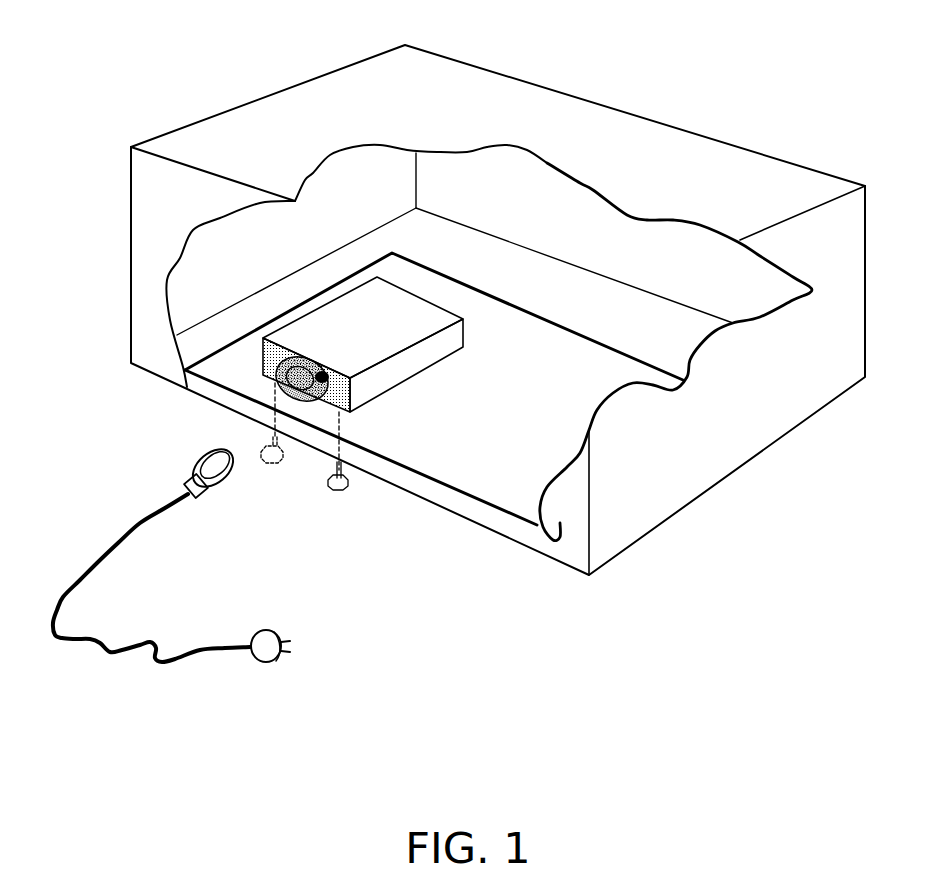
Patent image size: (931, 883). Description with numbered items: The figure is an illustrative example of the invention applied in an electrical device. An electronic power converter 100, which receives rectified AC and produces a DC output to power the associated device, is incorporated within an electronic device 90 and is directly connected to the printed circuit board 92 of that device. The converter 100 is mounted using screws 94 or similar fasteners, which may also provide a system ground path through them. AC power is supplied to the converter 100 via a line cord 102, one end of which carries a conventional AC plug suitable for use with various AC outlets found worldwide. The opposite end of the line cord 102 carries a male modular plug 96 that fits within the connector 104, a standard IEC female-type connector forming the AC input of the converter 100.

The electronic device 90 is at (205, 113).
The printed circuit board 92 is at (537, 463).
The screws 94 is at (260, 467).
The modular plug 96 is at (230, 480).
The electronic power converter 100 is at (328, 315).
The line cord 102 is at (157, 507).
The IEC female-type connector 104 is at (277, 380).